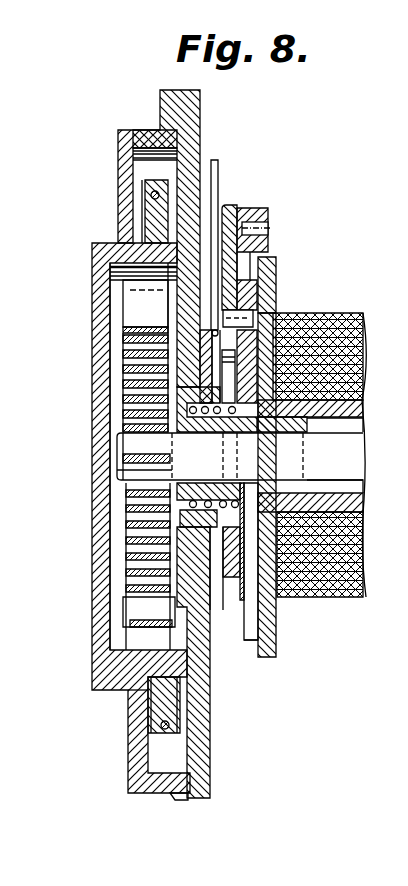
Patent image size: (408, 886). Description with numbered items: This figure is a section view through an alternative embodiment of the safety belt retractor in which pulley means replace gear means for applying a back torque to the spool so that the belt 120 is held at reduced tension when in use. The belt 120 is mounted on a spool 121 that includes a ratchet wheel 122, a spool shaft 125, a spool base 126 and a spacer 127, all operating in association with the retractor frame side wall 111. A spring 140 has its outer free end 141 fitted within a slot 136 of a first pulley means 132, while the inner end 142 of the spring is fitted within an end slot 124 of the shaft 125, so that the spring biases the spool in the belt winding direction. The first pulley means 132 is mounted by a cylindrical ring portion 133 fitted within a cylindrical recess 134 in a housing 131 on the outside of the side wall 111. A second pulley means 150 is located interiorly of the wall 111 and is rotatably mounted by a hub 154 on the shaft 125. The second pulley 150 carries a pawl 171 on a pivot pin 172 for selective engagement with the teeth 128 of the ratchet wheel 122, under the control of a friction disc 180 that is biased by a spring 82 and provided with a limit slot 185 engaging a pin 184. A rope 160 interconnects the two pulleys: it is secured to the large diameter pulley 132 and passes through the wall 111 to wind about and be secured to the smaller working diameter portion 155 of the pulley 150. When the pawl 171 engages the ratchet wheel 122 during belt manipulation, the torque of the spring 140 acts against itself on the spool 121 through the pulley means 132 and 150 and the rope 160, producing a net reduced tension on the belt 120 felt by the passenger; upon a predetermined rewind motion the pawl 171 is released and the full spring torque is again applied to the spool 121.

The spring 82 is at (185, 508).
The side wall 111 is at (205, 760).
The belt 120 is at (352, 590).
The spool 121 is at (290, 600).
The ratchet wheel 122 is at (280, 638).
The end slot 124 is at (115, 461).
The spool shaft 125 is at (110, 480).
The spool base 126 is at (276, 480).
The spacer 127 is at (262, 432).
The teeth 128 is at (268, 257).
The housing 131 is at (135, 725).
The first pulley means 132 is at (142, 198).
The cylindrical ring portion 133 is at (100, 248).
The cylindrical recess 134 is at (112, 250).
The slot 136 is at (110, 278).
The spring 140 is at (140, 375).
The outer free end 141 is at (140, 296).
The inner end 142 is at (125, 420).
The second pulley means 150 is at (215, 328).
The hub 154 is at (190, 523).
The portion 155 is at (197, 334).
The rope 160 is at (155, 191).
The pawl 171 is at (250, 207).
The pivot pin 172 is at (268, 228).
The friction disc 180 is at (262, 600).
The pin 184 is at (255, 318).
The limit slot 185 is at (257, 300).